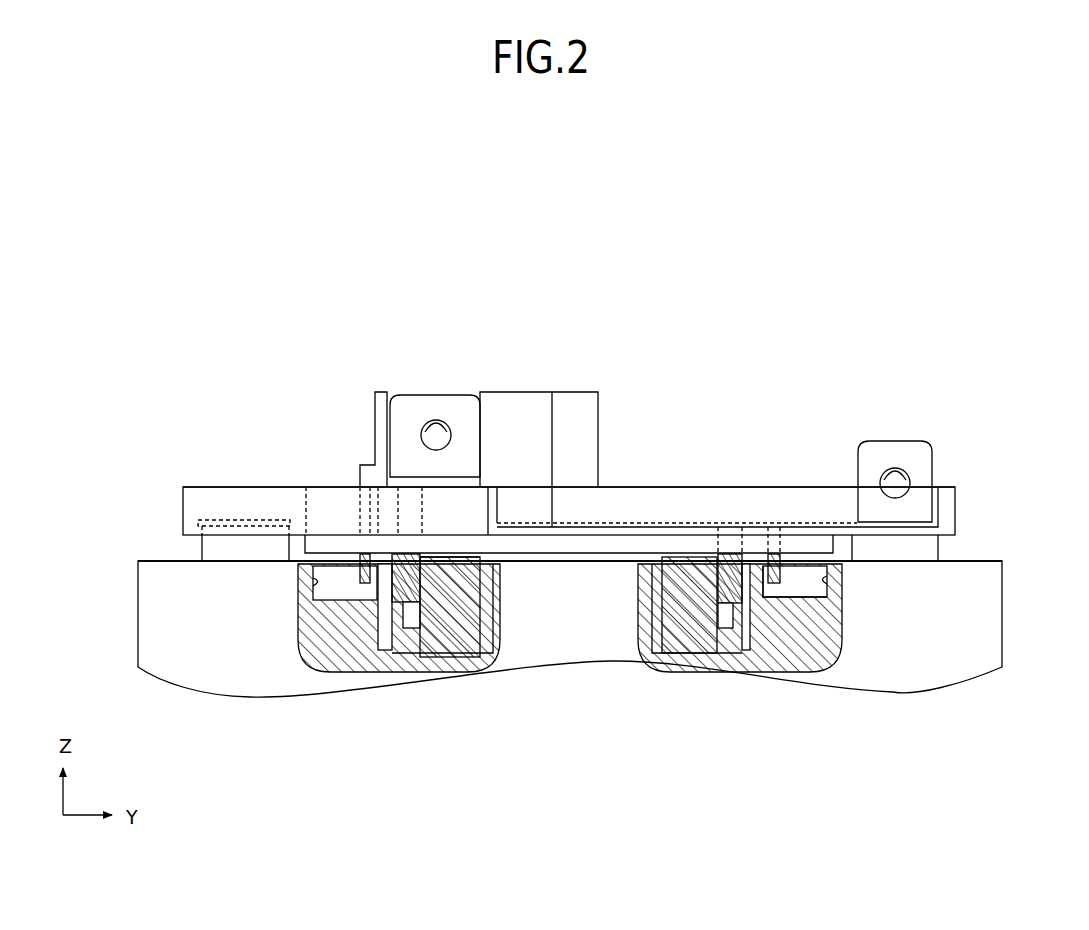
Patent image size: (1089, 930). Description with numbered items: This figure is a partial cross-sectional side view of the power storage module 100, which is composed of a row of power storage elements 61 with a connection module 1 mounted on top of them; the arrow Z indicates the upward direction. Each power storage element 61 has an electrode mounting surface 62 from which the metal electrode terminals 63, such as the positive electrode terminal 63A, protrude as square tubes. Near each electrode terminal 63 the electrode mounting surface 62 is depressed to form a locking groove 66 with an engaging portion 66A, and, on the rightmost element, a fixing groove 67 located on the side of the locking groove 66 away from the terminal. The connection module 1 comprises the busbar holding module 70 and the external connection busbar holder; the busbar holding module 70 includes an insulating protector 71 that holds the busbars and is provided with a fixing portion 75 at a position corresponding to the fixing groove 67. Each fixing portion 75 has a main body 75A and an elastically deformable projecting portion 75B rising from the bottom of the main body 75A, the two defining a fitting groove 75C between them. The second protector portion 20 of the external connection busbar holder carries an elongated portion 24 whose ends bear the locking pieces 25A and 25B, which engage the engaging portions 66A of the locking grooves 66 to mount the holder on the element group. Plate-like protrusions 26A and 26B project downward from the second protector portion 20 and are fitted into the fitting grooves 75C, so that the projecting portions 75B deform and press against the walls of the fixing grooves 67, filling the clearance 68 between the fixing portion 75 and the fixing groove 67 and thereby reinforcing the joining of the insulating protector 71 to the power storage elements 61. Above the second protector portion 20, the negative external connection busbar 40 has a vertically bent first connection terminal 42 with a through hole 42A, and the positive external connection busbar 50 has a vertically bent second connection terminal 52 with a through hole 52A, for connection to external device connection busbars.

The connection module 1 is at (870, 338).
The power storage module 100 is at (614, 752).
The second protector portion 20 is at (709, 459).
The elongated portion 24 is at (700, 487).
The locking piece 25A is at (785, 573).
The locking piece 25B is at (358, 577).
The protrusion 26A is at (730, 562).
The protrusion 26B is at (483, 580).
The negative external connection busbar 40 is at (449, 404).
The first connection terminal 42 is at (413, 407).
The through hole 42A is at (446, 422).
The positive external connection busbar 50 is at (938, 451).
The second connection terminal 52 is at (882, 457).
The through hole 52A is at (906, 478).
The power storage element 61 is at (990, 620).
The electrode mounting surface 62 is at (978, 560).
The electrode terminal 63 is at (217, 556).
The positive electrode terminal 63A is at (930, 552).
The locking groove 66 is at (305, 595).
The engaging portion 66A is at (773, 567).
The fixing groove 67 is at (750, 650).
The clearance 68 is at (393, 650).
The busbar holding module 70 is at (555, 486).
The insulating protector 71 is at (227, 487).
The fixing portion 75 is at (462, 624).
The main body 75A is at (422, 646).
The projecting portion 75B is at (392, 600).
The fitting groove 75C is at (727, 622).